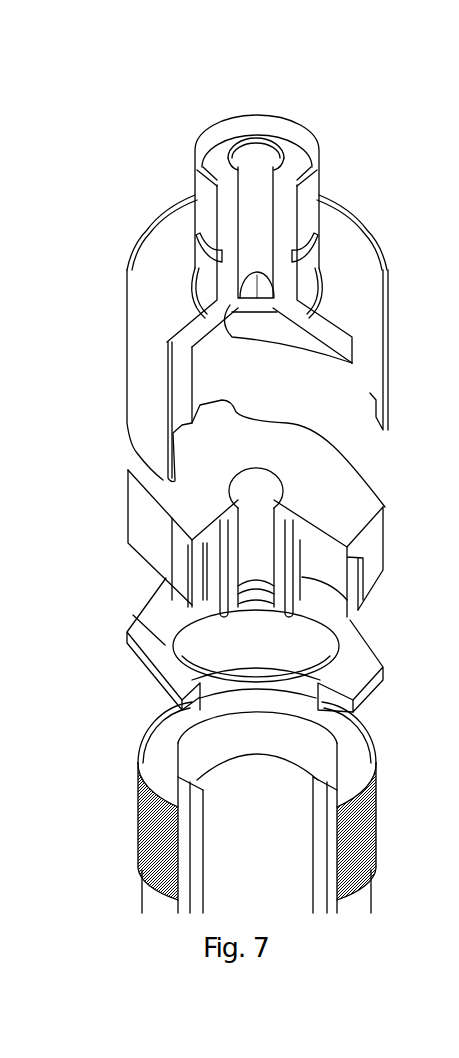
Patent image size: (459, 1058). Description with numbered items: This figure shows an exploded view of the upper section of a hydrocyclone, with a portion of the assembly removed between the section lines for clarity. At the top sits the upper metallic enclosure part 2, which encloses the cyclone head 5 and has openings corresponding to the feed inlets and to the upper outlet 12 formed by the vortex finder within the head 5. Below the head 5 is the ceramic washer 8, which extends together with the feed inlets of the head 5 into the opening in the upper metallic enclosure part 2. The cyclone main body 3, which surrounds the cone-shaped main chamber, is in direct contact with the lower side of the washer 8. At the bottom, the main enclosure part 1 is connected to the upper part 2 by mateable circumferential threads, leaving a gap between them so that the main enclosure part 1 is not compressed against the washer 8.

The upper outlet 12 is at (260, 156).
The upper metallic enclosure part 2 is at (348, 258).
The cyclone head 5 is at (365, 508).
The ceramic washer 8 is at (362, 663).
The cyclone main body 3 is at (340, 763).
The main enclosure part 1 is at (355, 790).